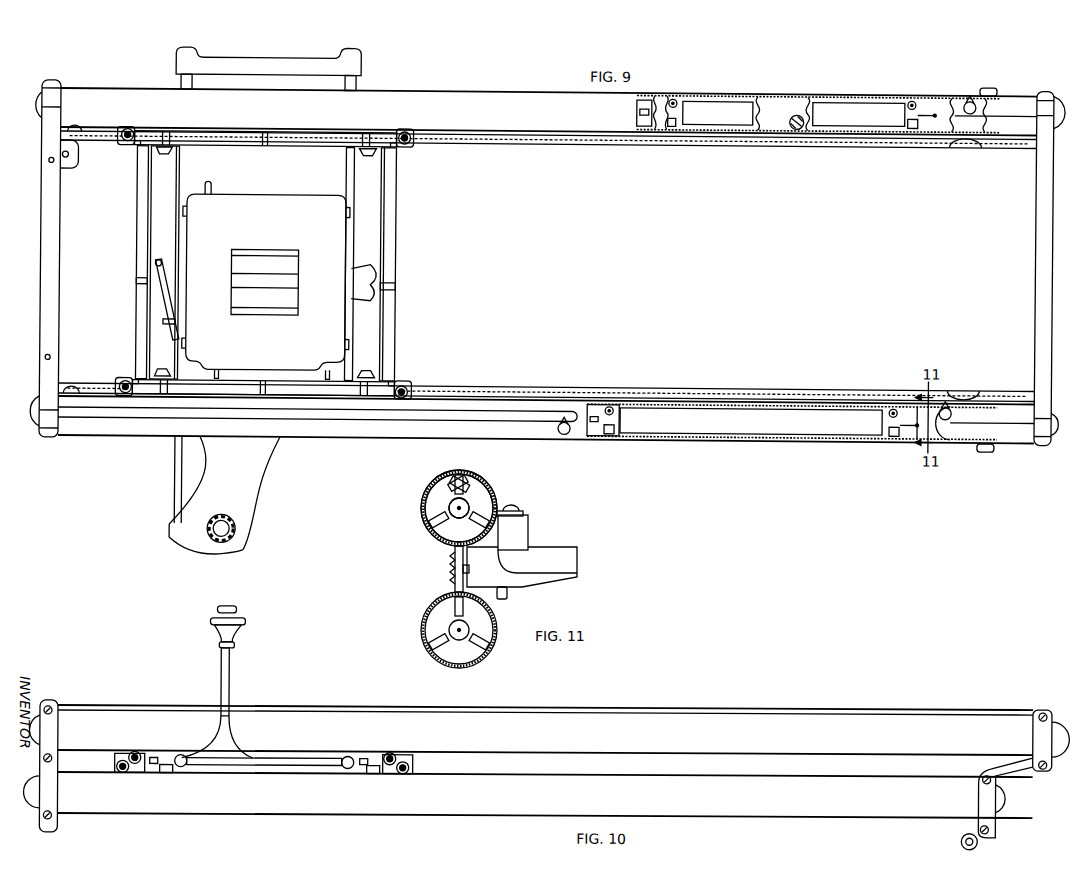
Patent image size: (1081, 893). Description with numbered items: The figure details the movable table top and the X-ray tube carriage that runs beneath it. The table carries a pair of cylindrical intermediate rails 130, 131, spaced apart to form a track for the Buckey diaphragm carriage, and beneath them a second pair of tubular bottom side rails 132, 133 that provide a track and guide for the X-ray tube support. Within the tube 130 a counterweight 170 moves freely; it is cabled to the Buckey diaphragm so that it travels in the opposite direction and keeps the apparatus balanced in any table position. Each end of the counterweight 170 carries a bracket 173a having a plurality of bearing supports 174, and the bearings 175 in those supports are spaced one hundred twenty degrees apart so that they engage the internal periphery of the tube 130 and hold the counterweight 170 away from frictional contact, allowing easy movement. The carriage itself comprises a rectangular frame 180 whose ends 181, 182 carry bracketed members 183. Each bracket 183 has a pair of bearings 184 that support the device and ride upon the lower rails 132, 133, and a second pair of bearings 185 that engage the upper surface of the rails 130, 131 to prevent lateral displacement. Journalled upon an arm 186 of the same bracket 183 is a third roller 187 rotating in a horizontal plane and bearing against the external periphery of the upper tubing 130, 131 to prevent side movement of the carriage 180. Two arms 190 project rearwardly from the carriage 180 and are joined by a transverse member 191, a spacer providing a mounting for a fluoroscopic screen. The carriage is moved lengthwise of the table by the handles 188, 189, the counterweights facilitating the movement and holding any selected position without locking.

In FIG. 9, the intermediate tubular rail 130 is at (540, 428).
In FIG. 11, the intermediate tubular rail 130 is at (483, 474).
In FIG. 10, the intermediate tubular rail 130 is at (888, 717).
In FIG. 9, the intermediate tubular rail 131 is at (493, 91).
In FIG. 9, the bottom side rail 132 is at (823, 434).
In FIG. 11, the bottom side rail 132 is at (420, 620).
In FIG. 10, the bottom side rail 132 is at (817, 809).
In FIG. 9, the bottom side rail 133 is at (842, 88).
In FIG. 11, the counterweight 170 is at (425, 490).
In FIG. 11, the bracket 173a is at (433, 507).
In FIG. 11, the bearing support 174 is at (486, 488).
In FIG. 11, the bearing 175 is at (460, 471).
In FIG. 9, the rectangular frame 180 is at (392, 229).
In FIG. 11, the rectangular frame 180 is at (553, 575).
In FIG. 9, the frame end 181 is at (333, 385).
In FIG. 9, the frame end 182 is at (385, 135).
In FIG. 11, the bracketed member 183 is at (523, 530).
In FIG. 10, the bracketed member 183 is at (120, 752).
In FIG. 10, the bearing 184 is at (123, 771).
In FIG. 10, the bearing 185 is at (136, 754).
In FIG. 9, the arm 186 is at (124, 139).
In FIG. 9, the roller 187 is at (134, 144).
In FIG. 11, the roller 187 is at (525, 510).
In FIG. 9, the handle 188 is at (241, 527).
In FIG. 10, the handle 188 is at (238, 608).
In FIG. 9, the handle 189 is at (240, 513).
In FIG. 10, the handle 189 is at (245, 622).
In FIG. 9, the arm 190 is at (180, 81).
In FIG. 9, the transverse member 191 is at (283, 58).